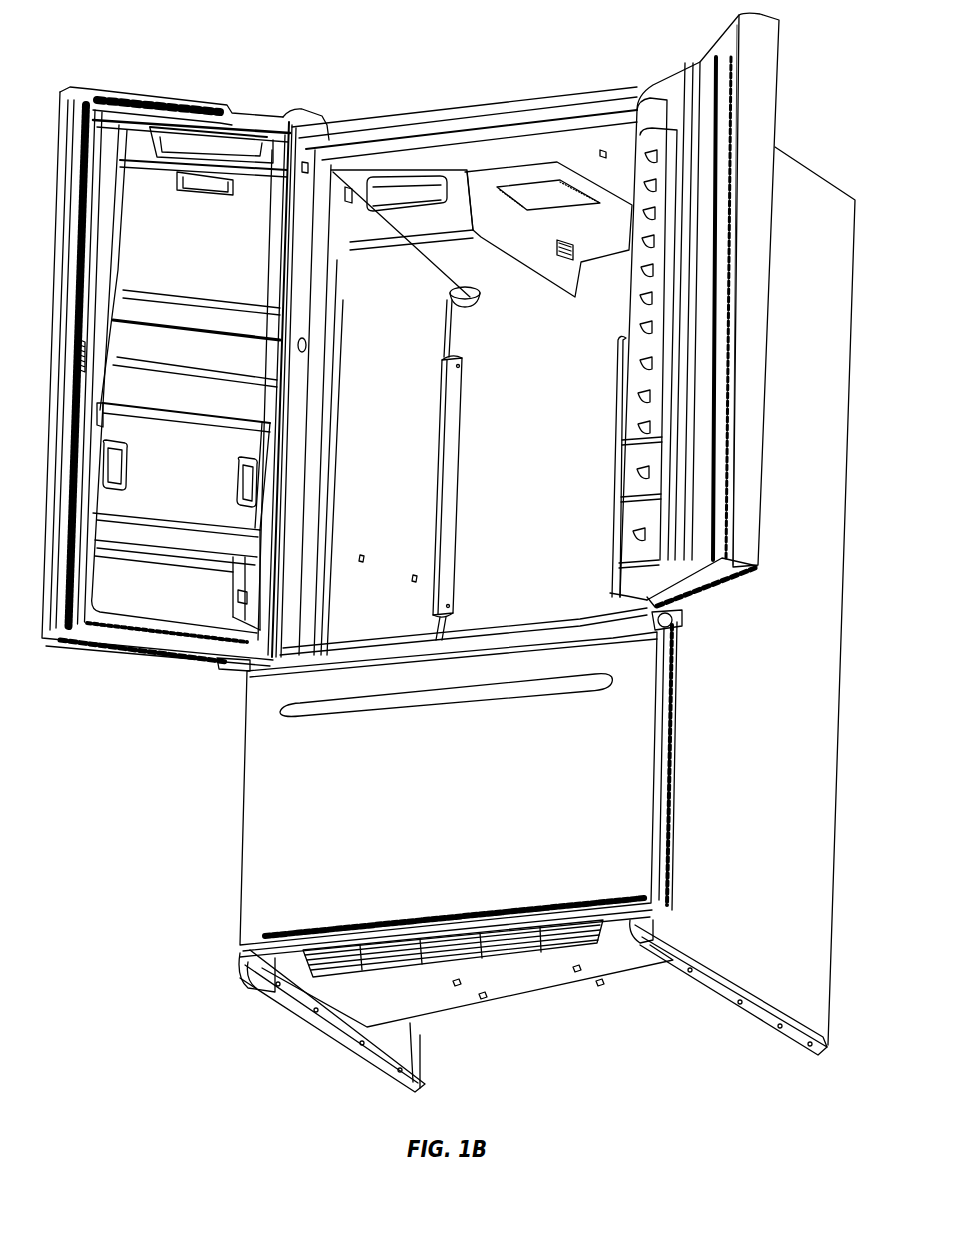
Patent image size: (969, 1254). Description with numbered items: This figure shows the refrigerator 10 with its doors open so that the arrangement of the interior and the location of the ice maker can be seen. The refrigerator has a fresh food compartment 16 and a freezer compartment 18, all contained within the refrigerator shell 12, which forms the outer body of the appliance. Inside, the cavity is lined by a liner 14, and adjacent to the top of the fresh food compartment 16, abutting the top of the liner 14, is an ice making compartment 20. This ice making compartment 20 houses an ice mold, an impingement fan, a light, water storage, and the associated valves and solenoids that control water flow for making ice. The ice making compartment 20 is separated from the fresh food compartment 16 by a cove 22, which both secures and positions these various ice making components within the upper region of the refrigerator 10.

The refrigerator 10 is at (184, 47).
The refrigerator shell 12 is at (817, 193).
The liner 14 is at (348, 248).
The fresh food compartment 16 is at (580, 493).
The freezer compartment 18 is at (278, 765).
The ice making compartment 20 is at (433, 195).
The cove 22 is at (497, 210).